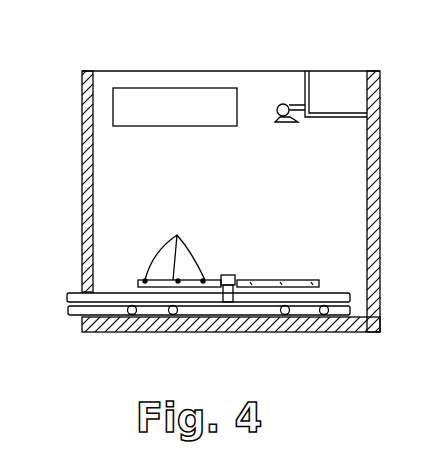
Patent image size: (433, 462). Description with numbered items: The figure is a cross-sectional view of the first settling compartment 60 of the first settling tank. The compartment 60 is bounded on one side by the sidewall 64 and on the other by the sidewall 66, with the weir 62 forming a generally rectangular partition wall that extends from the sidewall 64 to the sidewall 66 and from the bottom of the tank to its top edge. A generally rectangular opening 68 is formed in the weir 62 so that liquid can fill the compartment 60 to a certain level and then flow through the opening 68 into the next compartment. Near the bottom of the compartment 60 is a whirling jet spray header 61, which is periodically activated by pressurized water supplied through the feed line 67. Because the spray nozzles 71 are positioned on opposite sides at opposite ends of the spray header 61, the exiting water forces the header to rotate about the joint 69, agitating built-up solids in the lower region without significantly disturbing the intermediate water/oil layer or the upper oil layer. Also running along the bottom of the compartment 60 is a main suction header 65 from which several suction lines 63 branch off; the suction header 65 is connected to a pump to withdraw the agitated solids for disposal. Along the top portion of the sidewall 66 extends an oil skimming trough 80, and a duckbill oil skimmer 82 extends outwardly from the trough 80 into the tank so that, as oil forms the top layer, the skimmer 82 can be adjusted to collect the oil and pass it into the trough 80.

The first settling compartment 60 is at (250, 117).
The whirling jet spray header 61 is at (278, 264).
The weir 62 is at (177, 187).
The suction lines 63 is at (322, 316).
The sidewall 64 is at (82, 152).
The main suction header 65 is at (72, 315).
The sidewall 66 is at (380, 175).
The feed line 67 is at (70, 293).
The opening 68 is at (149, 103).
The joint 69 is at (224, 275).
The spray nozzles 71 is at (174, 247).
The oil skimming trough 80 is at (340, 98).
The duckbill oil skimmers 82 is at (282, 125).